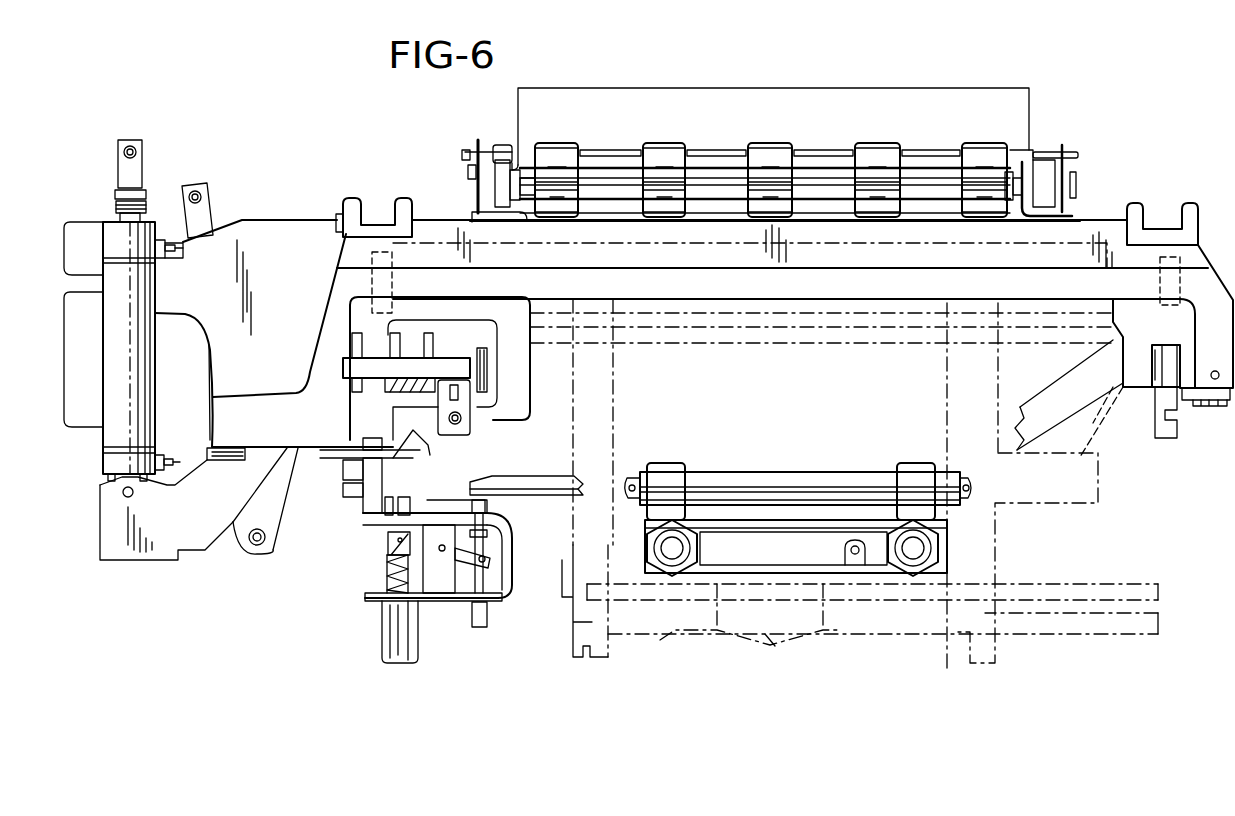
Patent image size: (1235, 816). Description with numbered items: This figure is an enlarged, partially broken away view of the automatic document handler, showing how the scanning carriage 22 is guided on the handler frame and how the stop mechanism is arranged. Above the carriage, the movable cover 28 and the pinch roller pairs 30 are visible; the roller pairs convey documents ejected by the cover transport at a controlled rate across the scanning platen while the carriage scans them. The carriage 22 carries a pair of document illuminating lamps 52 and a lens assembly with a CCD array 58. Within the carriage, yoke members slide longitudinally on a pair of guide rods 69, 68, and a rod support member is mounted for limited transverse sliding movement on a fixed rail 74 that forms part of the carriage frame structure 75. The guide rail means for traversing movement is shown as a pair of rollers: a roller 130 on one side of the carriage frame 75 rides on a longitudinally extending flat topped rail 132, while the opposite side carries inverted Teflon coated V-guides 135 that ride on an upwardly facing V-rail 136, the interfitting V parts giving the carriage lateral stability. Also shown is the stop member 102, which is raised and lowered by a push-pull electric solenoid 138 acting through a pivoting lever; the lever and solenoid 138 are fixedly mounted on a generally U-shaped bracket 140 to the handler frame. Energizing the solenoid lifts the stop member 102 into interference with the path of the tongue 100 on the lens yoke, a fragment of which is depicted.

The scanning carriage 22 is at (1000, 528).
The movable cover 28 is at (683, 98).
The pinch roller pairs 30 is at (768, 138).
The document illuminating lamps 52 is at (503, 305).
The CCD array 58 is at (772, 645).
The guide rod 68 is at (913, 553).
The guide rod 69 is at (672, 553).
The fixed rail 74 is at (812, 484).
The carriage frame structure 75 is at (835, 558).
The tongue 100 is at (533, 480).
The stop member 102 is at (487, 508).
The roller 130 is at (1158, 370).
The flat topped rail 132 is at (1183, 400).
The V-guides 135 is at (422, 440).
The V-rail 136 is at (413, 448).
The push-pull electric solenoid 138 is at (418, 640).
The U-shaped bracket 140 is at (510, 598).